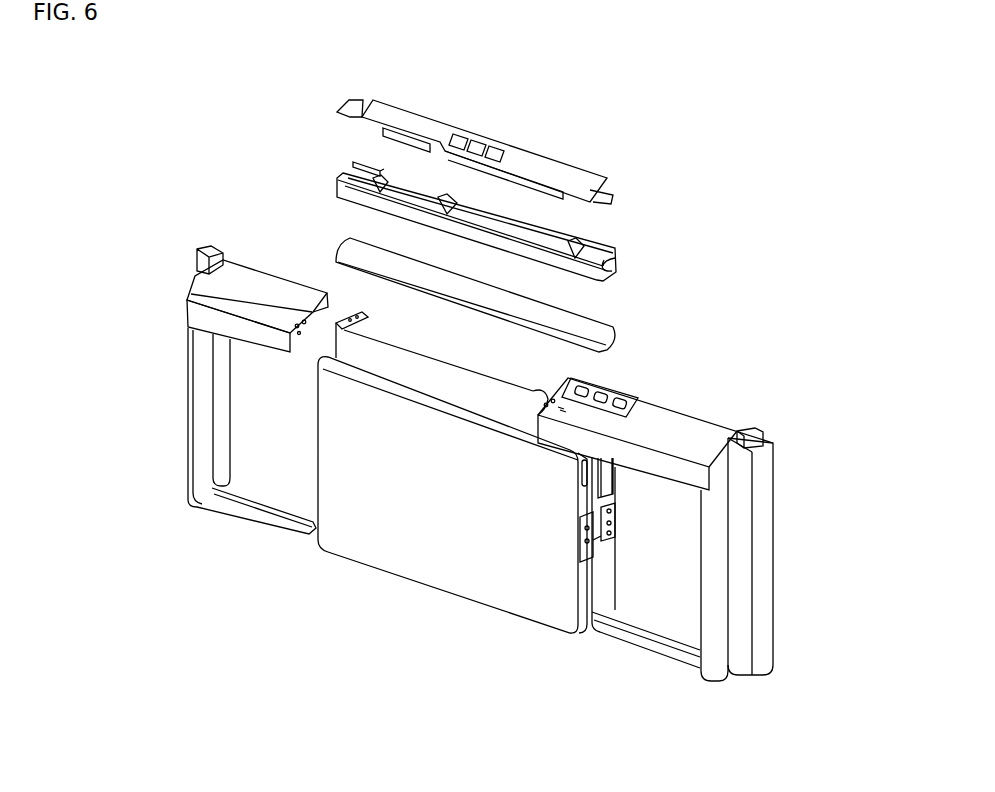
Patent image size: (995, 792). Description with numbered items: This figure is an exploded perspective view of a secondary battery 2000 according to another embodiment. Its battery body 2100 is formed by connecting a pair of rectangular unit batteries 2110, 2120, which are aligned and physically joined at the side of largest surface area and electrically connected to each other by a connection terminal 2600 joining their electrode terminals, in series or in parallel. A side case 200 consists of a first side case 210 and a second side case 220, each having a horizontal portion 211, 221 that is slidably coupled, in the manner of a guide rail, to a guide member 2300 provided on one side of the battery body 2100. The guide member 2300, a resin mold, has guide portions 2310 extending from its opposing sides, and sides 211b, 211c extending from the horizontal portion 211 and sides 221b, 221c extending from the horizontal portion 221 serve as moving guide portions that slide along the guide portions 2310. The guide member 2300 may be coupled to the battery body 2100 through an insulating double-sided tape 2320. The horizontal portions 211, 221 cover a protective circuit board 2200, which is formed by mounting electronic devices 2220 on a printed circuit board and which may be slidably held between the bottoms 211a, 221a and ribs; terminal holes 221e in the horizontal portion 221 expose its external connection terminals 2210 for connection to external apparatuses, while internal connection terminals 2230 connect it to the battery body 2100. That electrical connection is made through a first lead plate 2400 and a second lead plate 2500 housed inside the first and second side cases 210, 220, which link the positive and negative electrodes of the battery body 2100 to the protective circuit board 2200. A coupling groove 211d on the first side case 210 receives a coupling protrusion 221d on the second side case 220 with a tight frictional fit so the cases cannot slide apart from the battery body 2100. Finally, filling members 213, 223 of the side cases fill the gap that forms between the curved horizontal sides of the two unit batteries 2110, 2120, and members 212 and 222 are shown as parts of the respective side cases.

The secondary battery 2000 is at (779, 109).
The side case 200 is at (695, 518).
The first side case 210 is at (194, 401).
The horizontal portion 211 is at (194, 292).
The bottom 211a is at (203, 299).
The side 211b is at (203, 317).
The side 211c is at (197, 258).
The coupling groove 211d is at (292, 344).
The first vertical frame member 212 is at (205, 445).
The filling member 213 is at (263, 511).
The second side case 220 is at (695, 518).
The horizontal portion 221 is at (653, 402).
The bottom 221a is at (677, 422).
The side 221b is at (678, 464).
The side 221c is at (662, 376).
The coupling protrusion 221d is at (597, 375).
The terminal holes 221e is at (642, 391).
The second vertical frame member 222 is at (713, 638).
The filling member 223 is at (672, 648).
The battery body 2100 is at (509, 485).
The rectangular unit battery 2110 is at (477, 593).
The rectangular unit battery 2120 is at (606, 628).
The protective circuit board 2200 is at (507, 132).
The external connection terminals 2210 is at (480, 138).
The electronic devices 2220 is at (405, 128).
The internal connection terminals 2230 is at (352, 99).
The guide member 2300 is at (439, 217).
The guide portions 2310 is at (337, 177).
The double-sided tape 2320 is at (347, 243).
The first lead plate 2400 is at (612, 483).
The second lead plate 2500 is at (392, 303).
The connection terminal 2600 is at (603, 540).